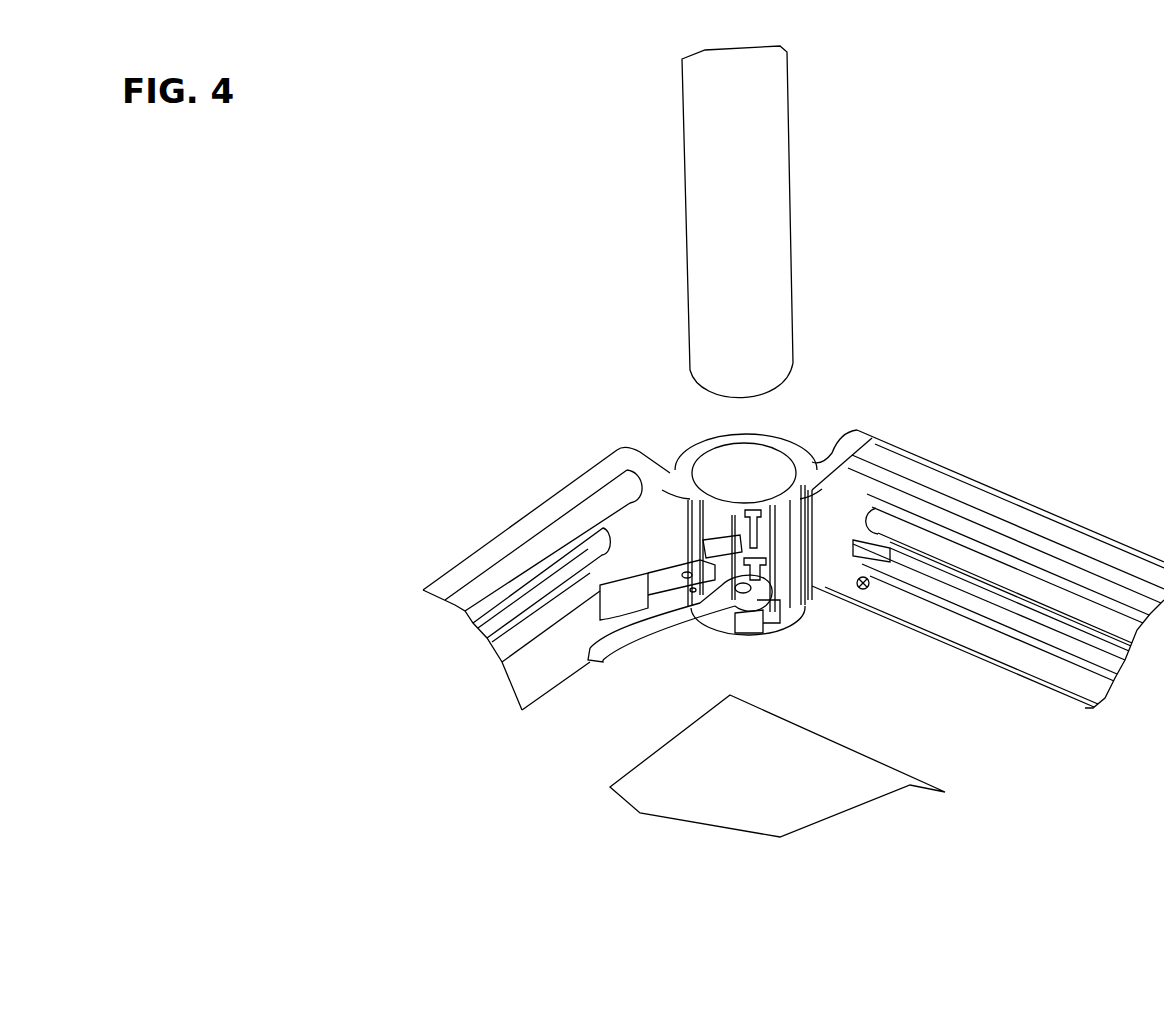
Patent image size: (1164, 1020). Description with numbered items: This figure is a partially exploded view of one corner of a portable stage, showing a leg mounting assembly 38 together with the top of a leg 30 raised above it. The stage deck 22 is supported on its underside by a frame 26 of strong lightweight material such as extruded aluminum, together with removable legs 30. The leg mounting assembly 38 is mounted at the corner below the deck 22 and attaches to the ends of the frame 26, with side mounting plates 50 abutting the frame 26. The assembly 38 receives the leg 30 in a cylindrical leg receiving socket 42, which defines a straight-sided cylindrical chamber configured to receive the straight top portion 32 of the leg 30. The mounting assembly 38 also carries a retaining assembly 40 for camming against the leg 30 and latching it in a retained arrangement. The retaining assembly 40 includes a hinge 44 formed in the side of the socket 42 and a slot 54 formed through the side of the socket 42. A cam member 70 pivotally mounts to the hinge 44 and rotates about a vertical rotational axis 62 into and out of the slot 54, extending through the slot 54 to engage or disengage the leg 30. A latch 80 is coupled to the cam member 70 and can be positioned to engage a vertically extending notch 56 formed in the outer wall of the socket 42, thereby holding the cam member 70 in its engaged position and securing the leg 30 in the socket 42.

The stage deck 22 is at (758, 786).
The frame 26 is at (553, 512).
The leg 30 is at (687, 222).
The straight top portion of leg 32 is at (773, 313).
The leg mounting assembly 38 is at (799, 514).
The retaining assembly 40 is at (679, 619).
The leg receiving socket 42 is at (753, 438).
The hinge 44 is at (765, 625).
The side mounting plate 50 is at (627, 467).
The slot 54 is at (715, 536).
The vertically extending notch 56 is at (812, 525).
The vertical rotational axis 62 is at (757, 503).
The cam member 70 is at (608, 653).
The latch 80 is at (625, 597).